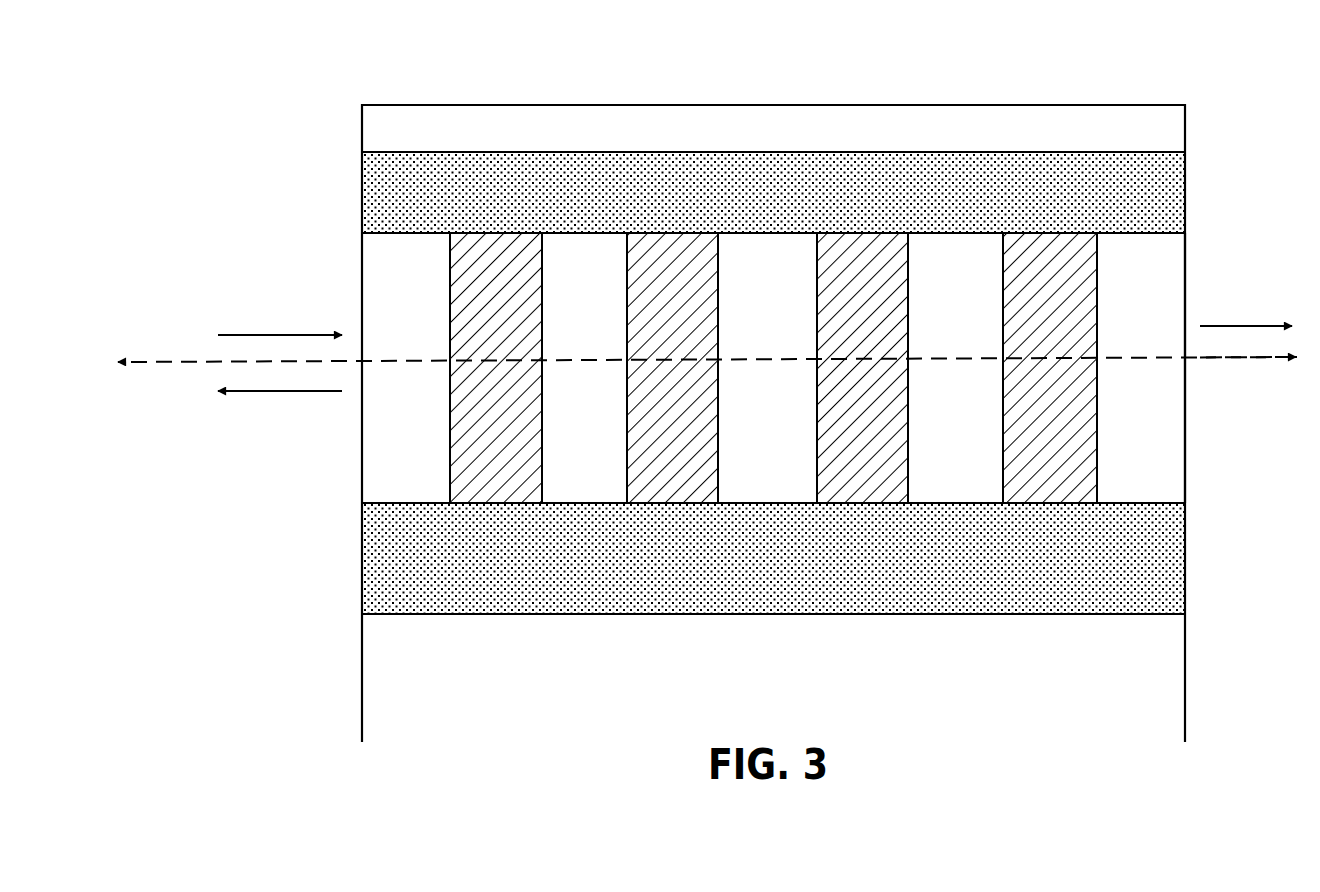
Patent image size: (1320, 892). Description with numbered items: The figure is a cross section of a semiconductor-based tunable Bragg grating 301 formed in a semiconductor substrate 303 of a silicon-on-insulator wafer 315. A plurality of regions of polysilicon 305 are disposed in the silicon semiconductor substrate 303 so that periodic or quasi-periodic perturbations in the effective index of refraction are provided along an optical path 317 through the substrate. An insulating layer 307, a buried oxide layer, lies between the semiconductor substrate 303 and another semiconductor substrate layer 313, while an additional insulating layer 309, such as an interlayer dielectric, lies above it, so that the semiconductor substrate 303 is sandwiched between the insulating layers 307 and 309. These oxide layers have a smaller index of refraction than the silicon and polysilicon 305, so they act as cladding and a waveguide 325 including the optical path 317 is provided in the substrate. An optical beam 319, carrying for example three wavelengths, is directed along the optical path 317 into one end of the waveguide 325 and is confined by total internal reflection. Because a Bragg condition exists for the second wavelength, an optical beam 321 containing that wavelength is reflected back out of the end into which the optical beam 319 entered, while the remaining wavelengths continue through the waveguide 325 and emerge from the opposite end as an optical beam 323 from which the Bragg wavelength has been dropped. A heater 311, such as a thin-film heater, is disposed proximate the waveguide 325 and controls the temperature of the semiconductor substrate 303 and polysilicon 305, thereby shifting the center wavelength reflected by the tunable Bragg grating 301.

The tunable Bragg grating 301 is at (1193, 30).
The semiconductor substrate 303 is at (421, 490).
The polysilicon regions 305 is at (510, 490).
The insulating layer 307 is at (1177, 553).
The insulating layer 309 is at (1176, 192).
The heater 311 is at (1176, 134).
The semiconductor substrate layer 313 is at (1175, 699).
The silicon-on-insulator wafer 315 is at (1176, 97).
The optical path 317 is at (148, 360).
The optical beam 319 is at (222, 326).
The optical beam 321 is at (252, 398).
The optical beam 323 is at (1270, 283).
The waveguide 325 is at (1188, 252).